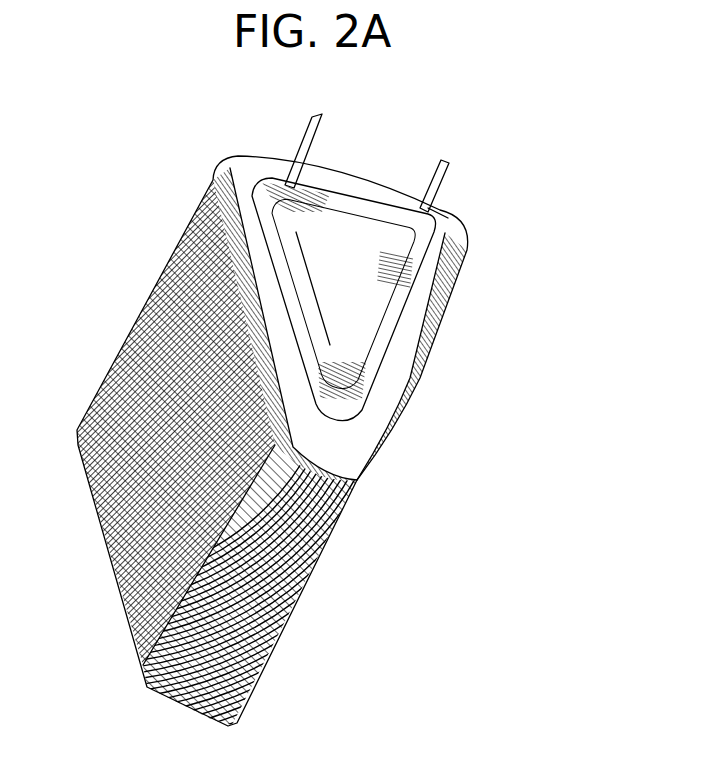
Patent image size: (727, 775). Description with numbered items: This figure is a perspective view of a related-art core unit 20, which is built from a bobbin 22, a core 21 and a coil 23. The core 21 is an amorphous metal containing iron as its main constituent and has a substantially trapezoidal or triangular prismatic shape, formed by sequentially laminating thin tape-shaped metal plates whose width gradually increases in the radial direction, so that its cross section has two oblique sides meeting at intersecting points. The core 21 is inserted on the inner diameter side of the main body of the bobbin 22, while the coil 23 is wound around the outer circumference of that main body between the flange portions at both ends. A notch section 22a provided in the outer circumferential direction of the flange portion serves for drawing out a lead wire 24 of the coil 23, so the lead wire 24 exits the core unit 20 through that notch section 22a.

The core unit 20 is at (158, 151).
The core 21 is at (377, 333).
The bobbin 22 is at (419, 338).
The notch section 22a is at (441, 206).
The coil 23 is at (183, 363).
The lead wire 24 is at (451, 168).